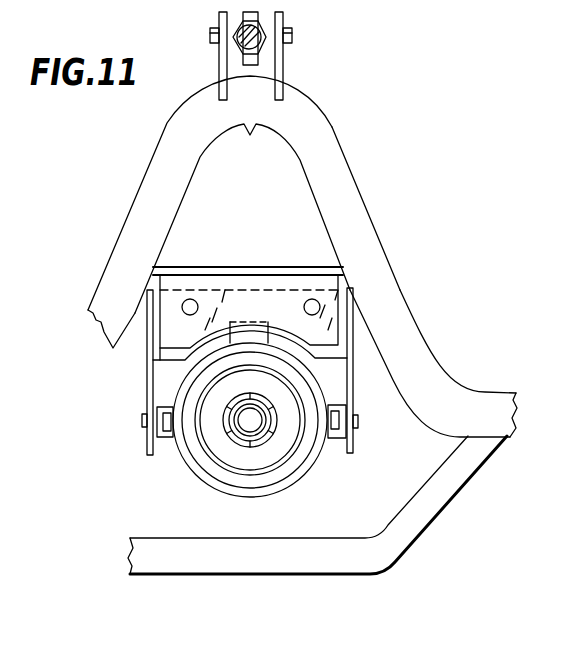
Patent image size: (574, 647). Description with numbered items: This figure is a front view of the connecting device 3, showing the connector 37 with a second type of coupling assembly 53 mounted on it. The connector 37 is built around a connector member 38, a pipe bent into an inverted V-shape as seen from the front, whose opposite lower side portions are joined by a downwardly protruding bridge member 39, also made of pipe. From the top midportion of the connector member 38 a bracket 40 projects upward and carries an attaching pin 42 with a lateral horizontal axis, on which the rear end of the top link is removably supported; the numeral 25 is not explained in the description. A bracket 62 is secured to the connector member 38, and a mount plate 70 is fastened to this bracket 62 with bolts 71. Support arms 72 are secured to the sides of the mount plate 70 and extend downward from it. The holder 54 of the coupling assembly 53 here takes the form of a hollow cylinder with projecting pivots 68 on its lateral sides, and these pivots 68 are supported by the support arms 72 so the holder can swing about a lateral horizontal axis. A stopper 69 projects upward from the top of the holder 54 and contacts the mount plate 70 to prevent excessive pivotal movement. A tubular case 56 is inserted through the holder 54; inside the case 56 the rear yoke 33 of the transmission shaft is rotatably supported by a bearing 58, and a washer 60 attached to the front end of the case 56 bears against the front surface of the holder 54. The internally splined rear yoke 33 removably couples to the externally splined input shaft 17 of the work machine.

The connecting device 3 is at (341, 124).
The pivot bolt 25 is at (252, 16).
The attaching pin 42 is at (290, 38).
The bracket 40 is at (242, 218).
The connector 37 is at (400, 266).
The connector member 38 is at (405, 342).
The bridge member 39 is at (284, 562).
The bracket 62 is at (263, 278).
The bolts 71 is at (190, 298).
The stopper 69 is at (253, 336).
The mount plate 70 is at (158, 297).
The support arms 72 is at (153, 393).
The pivots 68 is at (142, 421).
The coupling assembly 53 is at (148, 455).
The holder 54 is at (185, 465).
The washer 60 is at (246, 482).
The tubular case 56 is at (300, 442).
The bearing 58 is at (227, 455).
The rear yoke 33 is at (268, 443).
The input shaft 17 is at (255, 432).